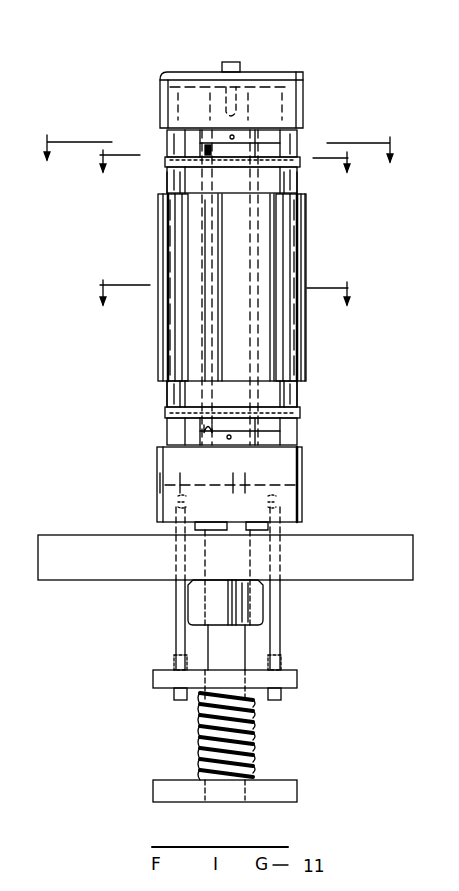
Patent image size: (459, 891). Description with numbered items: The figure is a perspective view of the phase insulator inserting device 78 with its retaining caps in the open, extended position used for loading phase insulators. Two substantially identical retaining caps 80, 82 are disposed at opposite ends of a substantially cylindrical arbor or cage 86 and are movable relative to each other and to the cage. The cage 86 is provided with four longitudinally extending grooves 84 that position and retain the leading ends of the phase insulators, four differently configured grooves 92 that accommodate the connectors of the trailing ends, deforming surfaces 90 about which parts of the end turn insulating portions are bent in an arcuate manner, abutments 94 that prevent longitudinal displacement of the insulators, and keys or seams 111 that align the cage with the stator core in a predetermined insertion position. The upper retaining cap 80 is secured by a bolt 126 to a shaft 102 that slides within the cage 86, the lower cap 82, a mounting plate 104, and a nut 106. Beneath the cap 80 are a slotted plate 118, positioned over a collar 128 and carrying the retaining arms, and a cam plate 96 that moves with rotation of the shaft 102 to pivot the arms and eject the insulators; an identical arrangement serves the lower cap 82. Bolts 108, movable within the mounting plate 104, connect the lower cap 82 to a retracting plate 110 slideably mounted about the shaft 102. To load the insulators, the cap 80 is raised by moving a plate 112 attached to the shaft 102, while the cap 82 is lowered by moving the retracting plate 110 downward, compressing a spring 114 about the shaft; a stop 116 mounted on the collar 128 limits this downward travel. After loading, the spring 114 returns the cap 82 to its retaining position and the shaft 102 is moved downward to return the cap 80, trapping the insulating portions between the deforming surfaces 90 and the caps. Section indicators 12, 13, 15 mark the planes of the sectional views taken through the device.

The inserting device 78 is at (318, 62).
The retaining cap 80 is at (190, 72).
The bolt 126 is at (236, 62).
The slotted plate 118 is at (168, 145).
The cam plate 96 is at (295, 161).
The deforming surfaces 90 is at (166, 184).
The abutments 94 is at (303, 196).
The grooves 84 is at (182, 255).
The cage 86 is at (305, 258).
The grooves 92 is at (175, 340).
The keys 111 is at (218, 233).
The retaining cap 82 is at (300, 480).
The stop 116 is at (198, 527).
The collar 128 is at (258, 530).
The mounting plate 104 is at (355, 537).
The nut 106 is at (263, 605).
The bolts 108 is at (178, 612).
The shaft 102 is at (208, 645).
The retracting plate 110 is at (297, 676).
The spring 114 is at (198, 708).
The plate 112 is at (297, 797).
The section line 13 is at (218, 163).
The section line 15 is at (228, 176).
The section line 12 is at (228, 306).